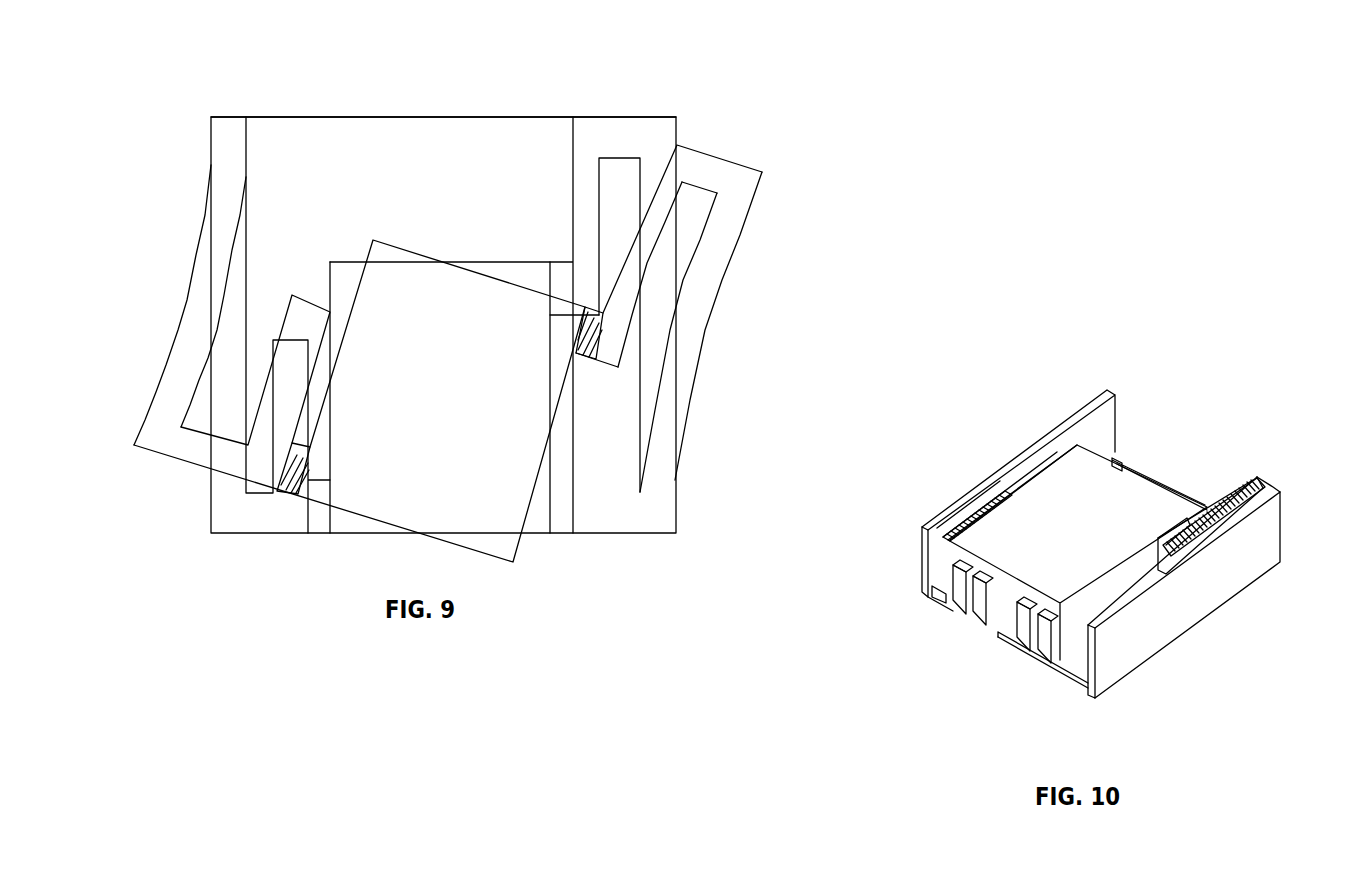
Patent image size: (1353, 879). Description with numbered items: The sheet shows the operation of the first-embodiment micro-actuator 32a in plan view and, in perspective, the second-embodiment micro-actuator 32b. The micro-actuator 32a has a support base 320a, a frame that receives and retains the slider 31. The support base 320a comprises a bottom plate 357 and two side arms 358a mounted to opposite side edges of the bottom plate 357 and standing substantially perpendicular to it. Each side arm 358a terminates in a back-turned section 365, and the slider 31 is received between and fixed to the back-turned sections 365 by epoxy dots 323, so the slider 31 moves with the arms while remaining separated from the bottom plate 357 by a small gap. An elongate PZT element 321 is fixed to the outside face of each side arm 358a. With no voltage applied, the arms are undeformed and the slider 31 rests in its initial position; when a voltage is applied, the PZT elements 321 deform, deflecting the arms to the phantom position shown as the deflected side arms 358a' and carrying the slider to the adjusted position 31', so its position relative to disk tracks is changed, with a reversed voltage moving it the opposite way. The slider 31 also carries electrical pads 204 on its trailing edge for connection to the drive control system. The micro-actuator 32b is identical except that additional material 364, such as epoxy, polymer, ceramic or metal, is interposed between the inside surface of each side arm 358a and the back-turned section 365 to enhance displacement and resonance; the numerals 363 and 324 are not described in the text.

In FIG. 9, the micro-actuator 32a is at (128, 66).
In FIG. 10, the micro-actuator 32b is at (1340, 229).
In FIG. 9, the bottom plate 357 is at (443, 91).
In FIG. 10, the bottom plate 357 is at (1008, 651).
In FIG. 9, the support base 320a is at (443, 284).
In FIG. 10, the support base 320a is at (1020, 702).
In FIG. 9, the slider 31 is at (446, 454).
In FIG. 10, the slider 31 is at (1077, 536).
In FIG. 9, the slider in adjusted position 31' is at (359, 475).
In FIG. 9, the side arm 358a is at (449, 369).
In FIG. 10, the side arm 358a is at (1103, 535).
In FIG. 9, the deflected side arm 358a' is at (775, 318).
In FIG. 9, the back-turned section 365 is at (532, 479).
In FIG. 10, the back-turned section 365 is at (1228, 498).
In FIG. 10, the PZT element 321 is at (1101, 518).
In FIG. 10, the end portion of leaf spring 363 is at (1050, 485).
In FIG. 10, the additional material 364 is at (916, 504).
In FIG. 10, the epoxy dot 323 is at (1021, 546).
In FIG. 10, the corner portion 324 is at (1305, 459).
In FIG. 10, the electrical pad 204 is at (934, 628).